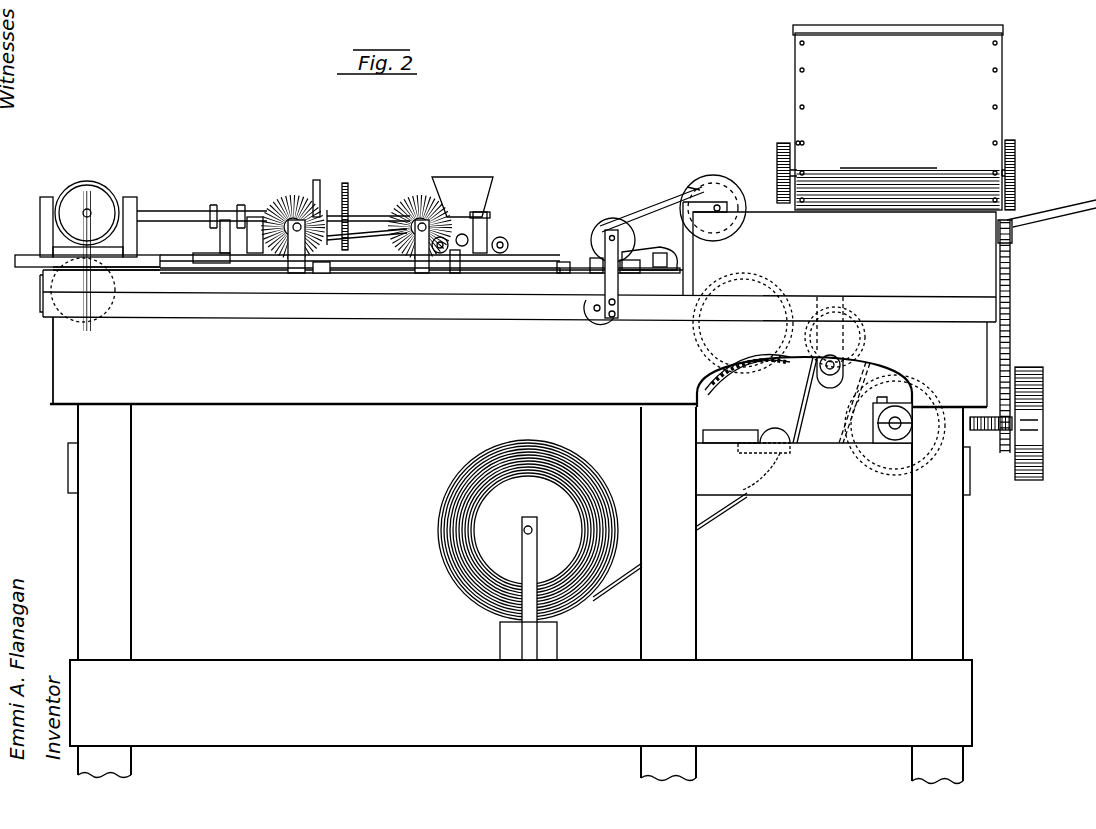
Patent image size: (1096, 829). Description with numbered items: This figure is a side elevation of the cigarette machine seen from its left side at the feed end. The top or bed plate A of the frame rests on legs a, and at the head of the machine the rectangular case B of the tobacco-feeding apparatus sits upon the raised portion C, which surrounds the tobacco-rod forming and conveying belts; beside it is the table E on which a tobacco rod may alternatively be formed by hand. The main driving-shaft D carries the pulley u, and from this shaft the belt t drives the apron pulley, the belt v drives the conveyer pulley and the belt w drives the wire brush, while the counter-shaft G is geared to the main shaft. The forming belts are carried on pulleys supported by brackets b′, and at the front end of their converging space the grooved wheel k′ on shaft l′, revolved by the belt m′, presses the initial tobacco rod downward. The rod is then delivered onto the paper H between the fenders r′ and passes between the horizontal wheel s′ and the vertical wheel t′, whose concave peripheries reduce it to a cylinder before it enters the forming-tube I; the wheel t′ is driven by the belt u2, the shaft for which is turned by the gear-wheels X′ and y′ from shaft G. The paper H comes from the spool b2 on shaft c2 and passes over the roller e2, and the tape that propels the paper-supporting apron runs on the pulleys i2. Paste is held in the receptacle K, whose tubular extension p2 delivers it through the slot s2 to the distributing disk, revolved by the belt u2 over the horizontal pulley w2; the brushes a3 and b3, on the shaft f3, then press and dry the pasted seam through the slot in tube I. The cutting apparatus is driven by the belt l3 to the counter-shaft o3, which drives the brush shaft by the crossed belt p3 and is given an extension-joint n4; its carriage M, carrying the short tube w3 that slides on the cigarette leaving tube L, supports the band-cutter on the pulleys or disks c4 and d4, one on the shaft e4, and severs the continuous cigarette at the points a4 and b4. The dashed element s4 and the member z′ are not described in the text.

The legs a is at (520, 594).
The top or bed plate A is at (972, 307).
The rectangular case B is at (898, 117).
The raised portion C is at (844, 267).
The main driving-shaft D is at (982, 430).
The table E is at (1051, 203).
The counter-shaft G is at (893, 441).
The paper H is at (583, 463).
The forming-tube I is at (378, 262).
The paste receptacle K is at (470, 186).
The tube L is at (217, 270).
The frame or carriage M is at (65, 224).
The belt t is at (1012, 323).
The pulley u is at (1043, 400).
The belt v is at (778, 172).
The belt w is at (53, 238).
The pulley or disk c4 is at (88, 184).
The shaft e4 is at (91, 211).
The extension-joint n4 is at (163, 220).
The short tube w3 is at (143, 256).
The cutting point b4 is at (43, 267).
The pulley or disk d4 is at (50, 325).
The wheel s4 is at (97, 273).
The cutting point a4 is at (123, 273).
The counter-shaft o3 is at (253, 217).
The brush a3 is at (295, 207).
The brush b3 is at (417, 207).
The shaft f3 is at (297, 273).
The belt l3 is at (322, 180).
The crossed belt p3 is at (348, 190).
The belt u2 is at (368, 218).
The horizontal pulley w2 is at (490, 217).
The slot s2 is at (500, 237).
The tubular extension p2 is at (468, 273).
The vertical wheel t′ is at (598, 230).
The horizontal wheel s′ is at (600, 257).
The belt m′ is at (657, 195).
The shaft l′ is at (710, 205).
The grooved wheel k′ is at (723, 175).
The bracket b′ is at (677, 235).
The fender r′ is at (645, 262).
The pulley i2 is at (760, 366).
The gear-wheel X′ is at (808, 382).
The gear-wheel y′ is at (806, 400).
The rod z′ is at (840, 467).
The roller e2 is at (775, 485).
The spool b2 is at (487, 525).
The shaft c2 is at (524, 532).